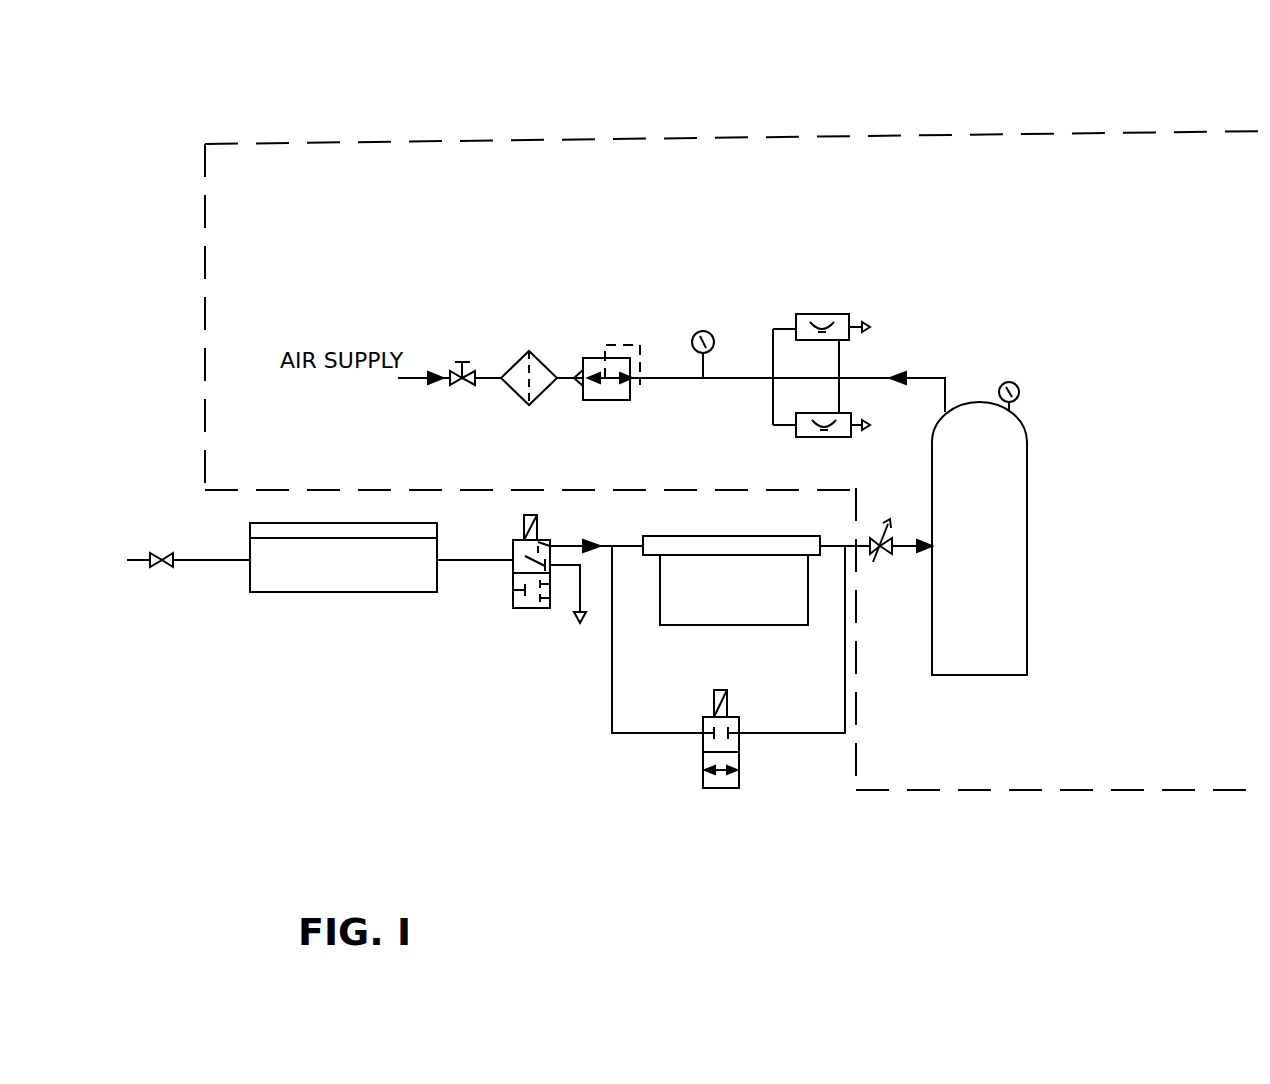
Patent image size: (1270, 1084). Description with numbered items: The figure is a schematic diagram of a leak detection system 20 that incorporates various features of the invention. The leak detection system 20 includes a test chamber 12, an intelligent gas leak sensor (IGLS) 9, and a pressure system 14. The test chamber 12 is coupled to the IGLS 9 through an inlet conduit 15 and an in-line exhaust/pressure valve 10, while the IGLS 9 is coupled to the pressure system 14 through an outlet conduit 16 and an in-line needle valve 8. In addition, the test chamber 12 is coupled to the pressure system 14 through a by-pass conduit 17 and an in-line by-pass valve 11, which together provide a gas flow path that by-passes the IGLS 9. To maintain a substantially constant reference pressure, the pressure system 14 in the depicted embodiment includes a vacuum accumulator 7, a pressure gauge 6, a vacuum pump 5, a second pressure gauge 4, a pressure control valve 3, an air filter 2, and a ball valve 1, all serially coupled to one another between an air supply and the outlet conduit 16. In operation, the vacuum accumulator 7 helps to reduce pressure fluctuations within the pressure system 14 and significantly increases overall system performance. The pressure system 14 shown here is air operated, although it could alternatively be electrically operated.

The ball valve 1 is at (462, 362).
The air filter 2 is at (529, 351).
The pressure control valve 3 is at (640, 345).
The pressure gauge 4 is at (712, 341).
The vacuum pump 5 is at (840, 315).
The pressure gauge 6 is at (1012, 383).
The vacuum accumulator 7 is at (1027, 508).
The needle valve 8 is at (882, 568).
The intelligent gas leak sensor (IGLS) 9 is at (668, 536).
The exhaust/pressure valve 10 is at (513, 606).
The by-pass valve 11 is at (708, 788).
The test chamber 12 is at (292, 523).
The pressure system 14 is at (1003, 760).
The inlet conduit 15 is at (632, 545).
The outlet conduit 16 is at (833, 545).
The by-pass conduit 17 is at (767, 735).
The leak detection system 20 is at (362, 745).